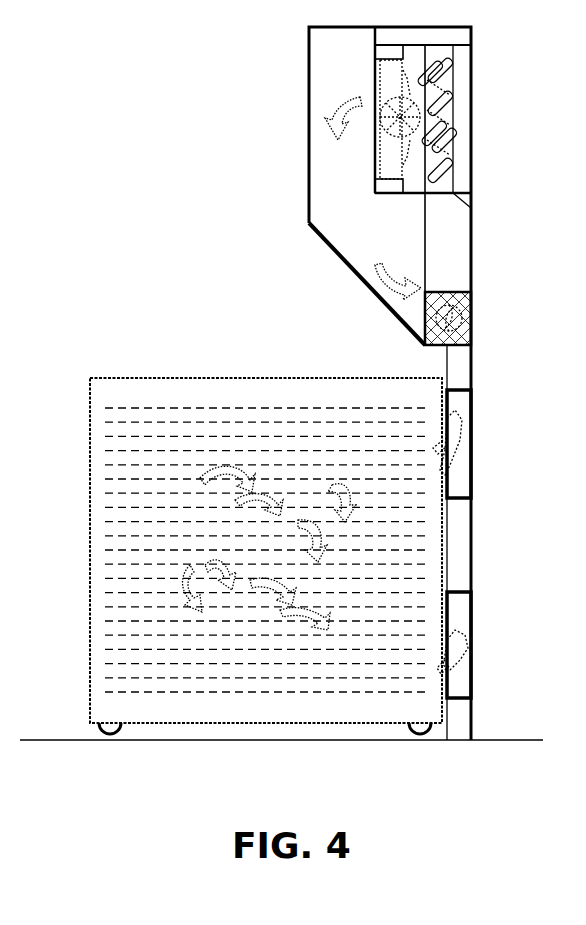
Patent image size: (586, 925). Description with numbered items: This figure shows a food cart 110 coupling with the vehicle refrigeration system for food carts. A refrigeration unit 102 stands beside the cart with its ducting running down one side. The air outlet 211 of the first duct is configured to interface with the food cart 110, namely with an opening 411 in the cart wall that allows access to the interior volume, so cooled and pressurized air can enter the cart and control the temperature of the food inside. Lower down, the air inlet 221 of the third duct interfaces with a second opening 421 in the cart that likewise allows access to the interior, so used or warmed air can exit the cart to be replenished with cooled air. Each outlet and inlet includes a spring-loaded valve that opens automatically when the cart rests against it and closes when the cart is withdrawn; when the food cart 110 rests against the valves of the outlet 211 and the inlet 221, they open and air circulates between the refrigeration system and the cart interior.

The air conditioning unit 102 is at (471, 133).
The food cart 110 is at (193, 713).
The air outlet 211 is at (471, 458).
The air inlet 221 is at (471, 625).
The opening 411 is at (440, 435).
The opening 421 is at (447, 655).